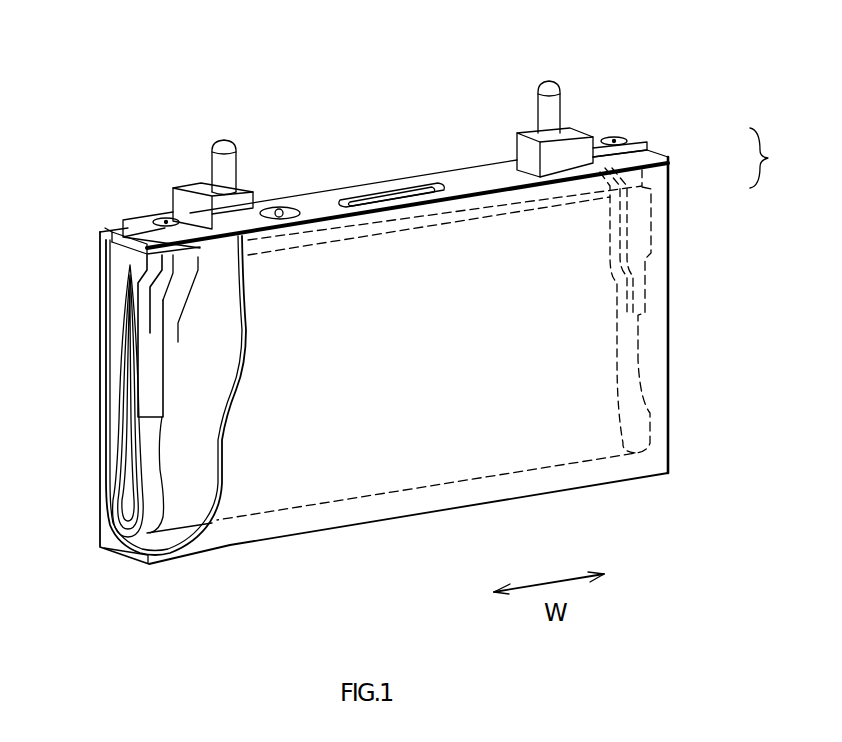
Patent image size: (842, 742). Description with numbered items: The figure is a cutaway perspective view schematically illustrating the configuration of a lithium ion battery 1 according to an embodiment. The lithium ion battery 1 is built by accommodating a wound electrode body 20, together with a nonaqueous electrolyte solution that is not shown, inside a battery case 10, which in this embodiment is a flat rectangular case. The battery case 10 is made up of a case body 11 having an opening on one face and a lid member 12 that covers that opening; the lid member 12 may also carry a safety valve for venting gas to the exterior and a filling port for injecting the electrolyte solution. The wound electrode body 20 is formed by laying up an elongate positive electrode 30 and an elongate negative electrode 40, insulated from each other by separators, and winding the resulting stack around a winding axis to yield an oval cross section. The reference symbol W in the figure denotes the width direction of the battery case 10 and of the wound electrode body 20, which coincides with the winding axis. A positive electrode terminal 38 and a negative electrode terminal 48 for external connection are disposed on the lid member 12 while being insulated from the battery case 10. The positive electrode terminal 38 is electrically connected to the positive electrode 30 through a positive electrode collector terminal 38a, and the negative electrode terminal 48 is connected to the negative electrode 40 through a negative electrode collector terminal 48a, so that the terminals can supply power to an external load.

The lithium ion battery 1 is at (114, 87).
The battery case 10 is at (775, 158).
The case body 11 is at (660, 190).
The lid member 12 is at (660, 151).
The wound electrode body 20 is at (588, 373).
The positive electrode 30 is at (148, 462).
The positive electrode terminal 38 is at (222, 138).
The positive electrode collector terminal 38a is at (150, 372).
The negative electrode 40 is at (632, 412).
The negative electrode terminal 48 is at (550, 82).
The negative electrode collector terminal 48a is at (630, 294).